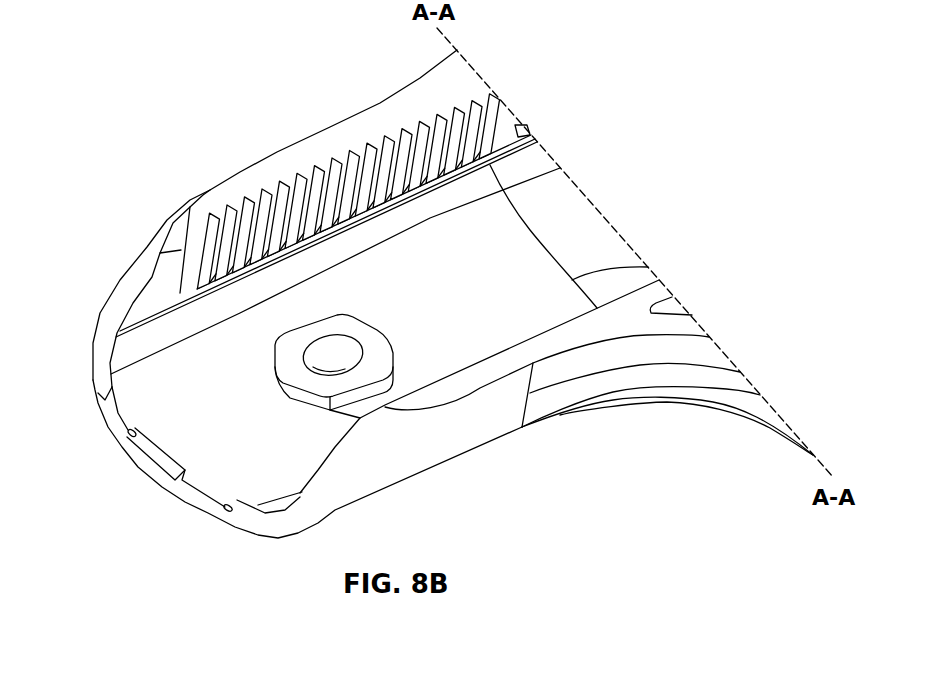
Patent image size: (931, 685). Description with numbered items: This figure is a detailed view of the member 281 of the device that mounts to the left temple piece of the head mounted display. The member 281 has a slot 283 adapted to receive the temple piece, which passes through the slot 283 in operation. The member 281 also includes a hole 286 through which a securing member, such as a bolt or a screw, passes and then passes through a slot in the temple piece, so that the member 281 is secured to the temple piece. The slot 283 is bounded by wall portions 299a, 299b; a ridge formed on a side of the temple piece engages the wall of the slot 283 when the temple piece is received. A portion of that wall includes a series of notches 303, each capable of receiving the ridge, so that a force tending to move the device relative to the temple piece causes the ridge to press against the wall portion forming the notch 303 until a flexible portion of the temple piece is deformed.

The member 281 is at (280, 135).
The notches 303 is at (396, 226).
The hole 286 is at (360, 334).
The wall 299a is at (168, 305).
The wall 299b is at (322, 447).
The slot 283 is at (146, 408).